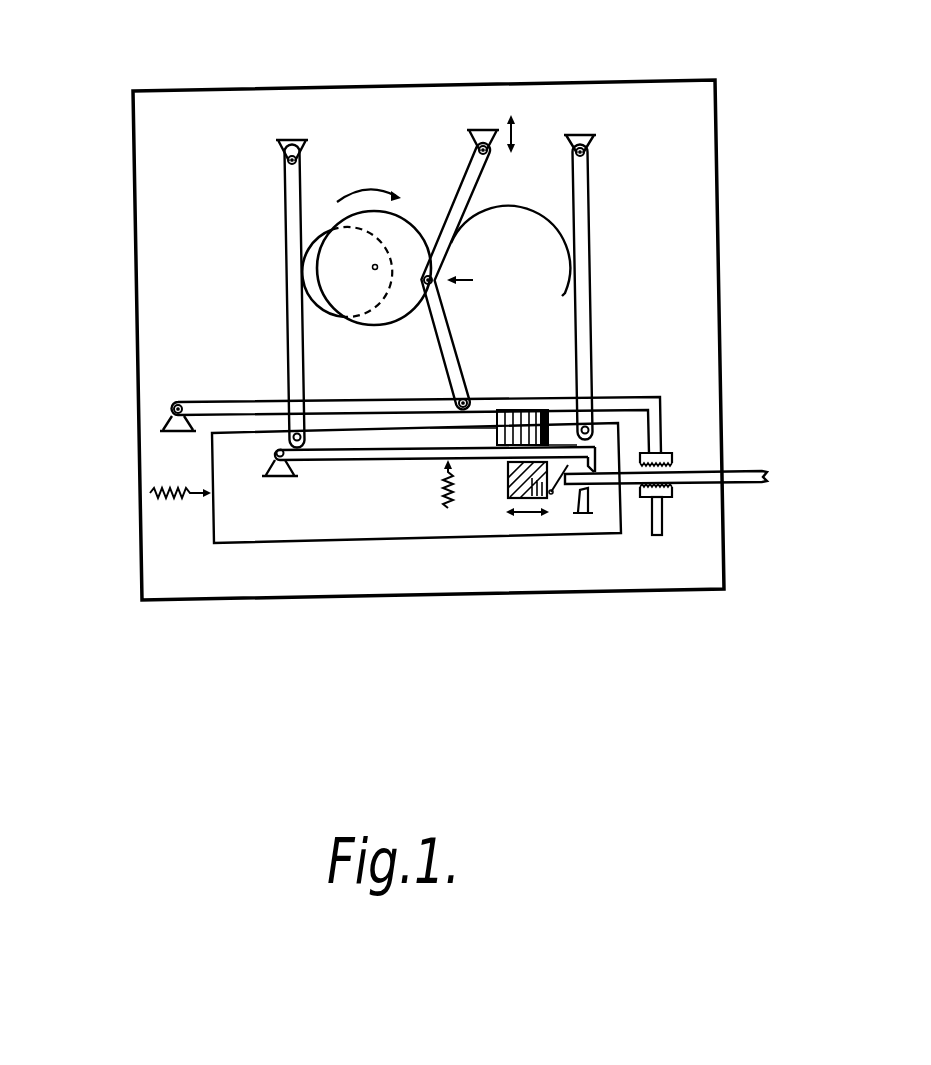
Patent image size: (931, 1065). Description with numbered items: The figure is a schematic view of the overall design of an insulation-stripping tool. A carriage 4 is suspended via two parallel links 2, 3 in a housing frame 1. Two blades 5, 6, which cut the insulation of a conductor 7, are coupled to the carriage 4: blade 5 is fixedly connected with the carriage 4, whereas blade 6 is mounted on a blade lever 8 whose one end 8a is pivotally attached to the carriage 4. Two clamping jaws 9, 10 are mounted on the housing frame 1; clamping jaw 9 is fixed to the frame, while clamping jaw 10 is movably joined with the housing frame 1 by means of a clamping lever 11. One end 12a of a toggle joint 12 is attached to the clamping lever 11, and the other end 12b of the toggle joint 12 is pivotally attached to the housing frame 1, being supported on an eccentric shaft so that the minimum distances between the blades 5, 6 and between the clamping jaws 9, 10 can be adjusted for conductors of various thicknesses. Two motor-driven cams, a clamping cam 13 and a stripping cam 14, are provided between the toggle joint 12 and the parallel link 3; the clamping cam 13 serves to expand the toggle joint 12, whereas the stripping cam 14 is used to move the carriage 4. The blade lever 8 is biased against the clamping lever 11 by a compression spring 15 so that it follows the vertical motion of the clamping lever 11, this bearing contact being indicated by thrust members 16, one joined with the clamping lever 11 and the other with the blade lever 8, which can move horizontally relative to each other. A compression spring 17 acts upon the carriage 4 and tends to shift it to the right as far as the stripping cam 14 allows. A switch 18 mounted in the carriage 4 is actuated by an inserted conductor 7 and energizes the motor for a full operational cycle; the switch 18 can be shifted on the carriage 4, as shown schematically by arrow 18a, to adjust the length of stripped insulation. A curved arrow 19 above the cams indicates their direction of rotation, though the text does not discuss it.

The housing frame 1 is at (707, 212).
The parallel link 2 is at (583, 267).
The parallel link 3 is at (293, 215).
The carriage 4 is at (352, 517).
The blade 5 is at (583, 515).
The blade 6 is at (592, 465).
The conductor 7 is at (752, 482).
The blade lever 8 is at (338, 455).
The end of blade lever 8a is at (265, 463).
The clamping jaw 9 is at (672, 493).
The clamping jaw 10 is at (672, 458).
The clamping lever 11 is at (638, 402).
The toggle joint 12 is at (463, 182).
The end of toggle joint 12a is at (472, 395).
The end of toggle joint 12b is at (492, 138).
The clamping cam 13 is at (400, 228).
The stripping cam 14 is at (307, 290).
The compression spring 15 is at (443, 503).
The thrust members 16 is at (523, 437).
The compression spring 17 is at (175, 503).
The switch 18 is at (533, 495).
The arrow 18a is at (548, 514).
The rotation arrow 19 is at (370, 192).